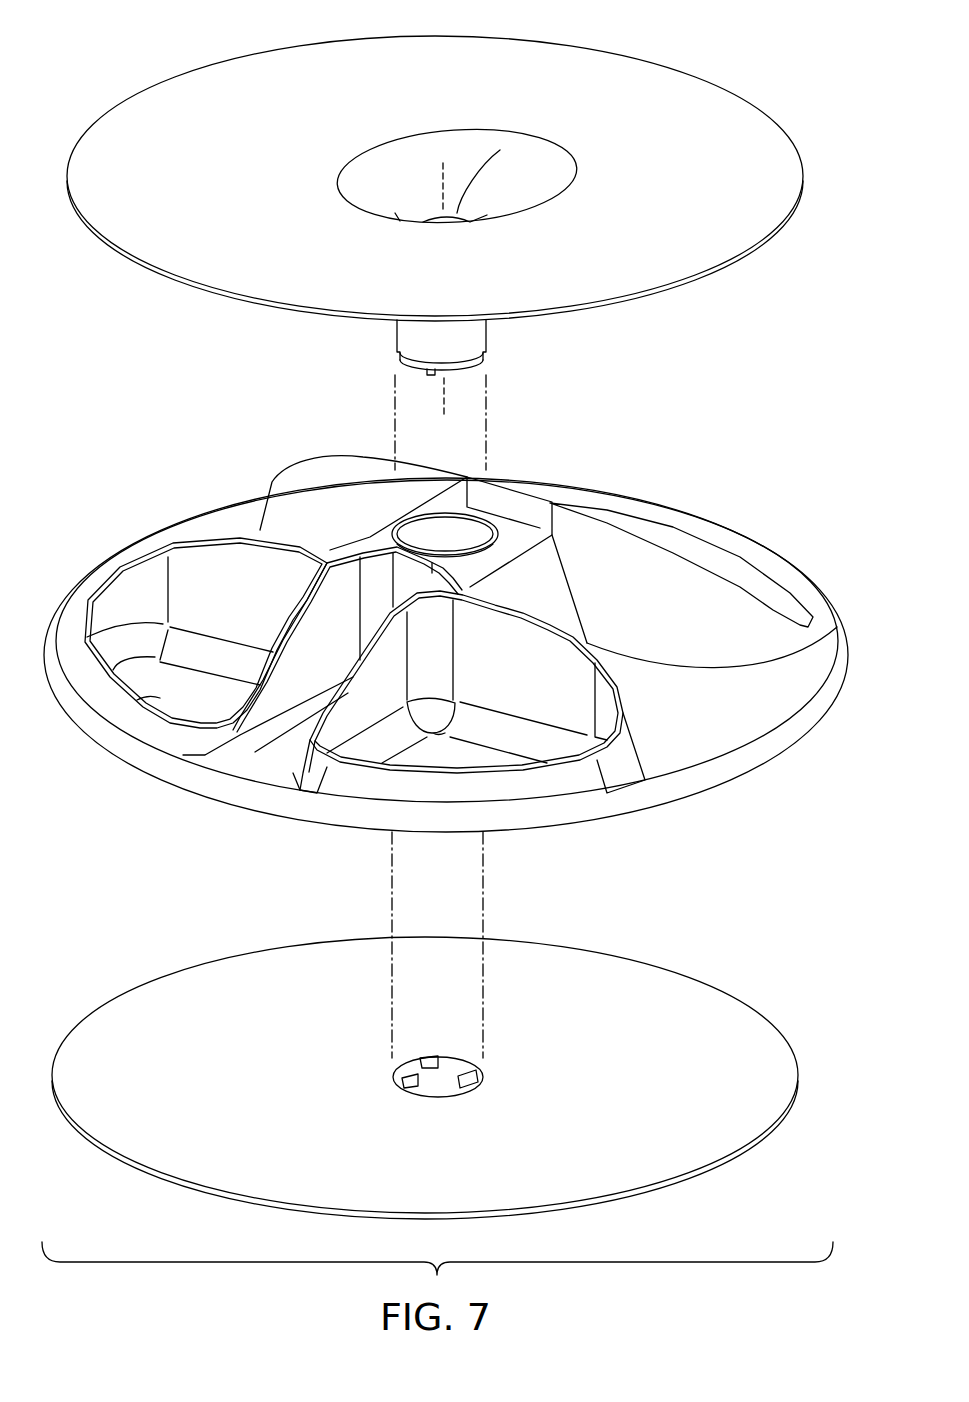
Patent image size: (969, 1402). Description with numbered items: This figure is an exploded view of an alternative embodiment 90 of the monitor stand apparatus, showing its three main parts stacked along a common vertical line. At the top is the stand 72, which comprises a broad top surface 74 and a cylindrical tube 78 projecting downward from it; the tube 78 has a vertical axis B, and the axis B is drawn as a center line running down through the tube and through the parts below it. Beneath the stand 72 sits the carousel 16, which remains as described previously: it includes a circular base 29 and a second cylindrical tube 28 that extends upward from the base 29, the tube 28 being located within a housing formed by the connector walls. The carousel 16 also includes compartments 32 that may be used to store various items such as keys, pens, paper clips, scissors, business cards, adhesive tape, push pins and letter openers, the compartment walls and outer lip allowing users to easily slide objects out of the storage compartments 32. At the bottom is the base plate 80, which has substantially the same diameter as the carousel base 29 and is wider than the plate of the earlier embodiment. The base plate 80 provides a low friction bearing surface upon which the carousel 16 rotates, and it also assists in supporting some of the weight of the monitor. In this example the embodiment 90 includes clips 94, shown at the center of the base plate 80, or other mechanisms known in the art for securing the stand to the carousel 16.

The alternative embodiment 90 is at (680, 45).
The top surface 74 is at (738, 122).
The stand 72 is at (730, 265).
The vertical axis B is at (443, 182).
The cylindrical tube 78 is at (397, 340).
The carousel 16 is at (713, 514).
The second cylindrical tube 28 is at (445, 555).
The base 29 is at (727, 725).
The compartments 32 is at (137, 700).
The base plate 80 is at (667, 970).
The clips 94 is at (428, 1053).